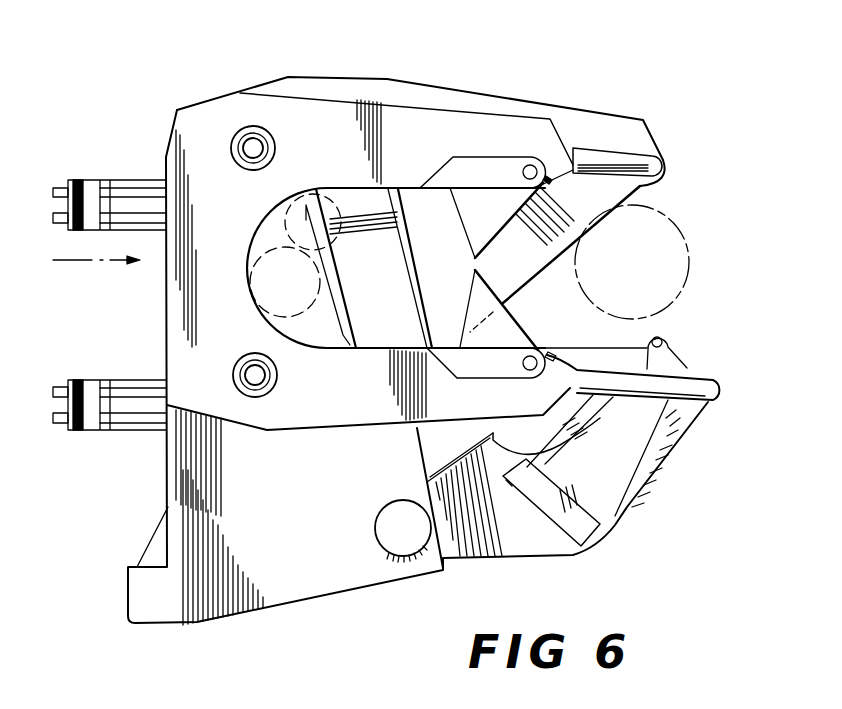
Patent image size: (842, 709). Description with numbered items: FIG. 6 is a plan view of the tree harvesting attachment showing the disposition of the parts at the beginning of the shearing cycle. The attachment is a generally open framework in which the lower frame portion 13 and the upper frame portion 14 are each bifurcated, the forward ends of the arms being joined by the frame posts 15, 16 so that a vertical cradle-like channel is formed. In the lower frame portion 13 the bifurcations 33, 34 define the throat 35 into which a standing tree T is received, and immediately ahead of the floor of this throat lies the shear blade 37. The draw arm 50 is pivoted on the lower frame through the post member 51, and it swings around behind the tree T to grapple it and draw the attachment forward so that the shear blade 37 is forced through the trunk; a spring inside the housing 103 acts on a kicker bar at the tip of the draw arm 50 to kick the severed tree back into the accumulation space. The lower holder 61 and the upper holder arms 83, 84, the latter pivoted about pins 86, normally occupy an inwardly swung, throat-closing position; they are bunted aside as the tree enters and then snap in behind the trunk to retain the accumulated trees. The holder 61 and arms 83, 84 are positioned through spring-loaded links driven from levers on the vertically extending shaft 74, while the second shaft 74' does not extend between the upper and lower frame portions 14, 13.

The lower frame portion 13 is at (596, 104).
The upper frame portion 14 is at (431, 104).
The bifurcation 33 is at (637, 119).
The frame post 16 is at (643, 157).
The pin 86 is at (533, 166).
The shear blade 37 is at (390, 281).
The holder arm 83 is at (500, 221).
The holder arm 84 is at (483, 287).
The holder 61 is at (530, 279).
The throat 35 is at (666, 209).
The tree T is at (684, 246).
The frame post 15 is at (688, 382).
The bifurcation 34 is at (695, 349).
The draw arm 50 is at (530, 559).
The post member 51 is at (390, 513).
The housing 103 is at (584, 525).
The vertically extending shaft 74 is at (243, 138).
The second shaft 74' is at (270, 382).